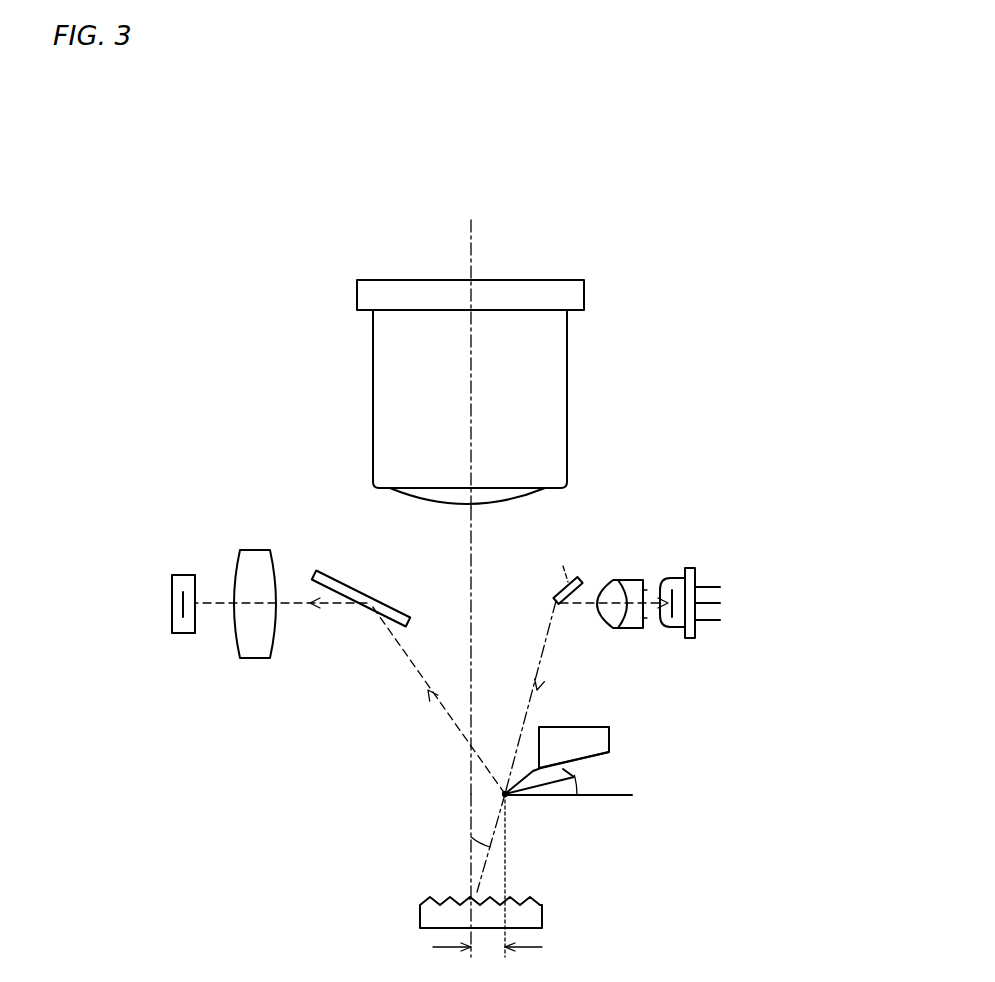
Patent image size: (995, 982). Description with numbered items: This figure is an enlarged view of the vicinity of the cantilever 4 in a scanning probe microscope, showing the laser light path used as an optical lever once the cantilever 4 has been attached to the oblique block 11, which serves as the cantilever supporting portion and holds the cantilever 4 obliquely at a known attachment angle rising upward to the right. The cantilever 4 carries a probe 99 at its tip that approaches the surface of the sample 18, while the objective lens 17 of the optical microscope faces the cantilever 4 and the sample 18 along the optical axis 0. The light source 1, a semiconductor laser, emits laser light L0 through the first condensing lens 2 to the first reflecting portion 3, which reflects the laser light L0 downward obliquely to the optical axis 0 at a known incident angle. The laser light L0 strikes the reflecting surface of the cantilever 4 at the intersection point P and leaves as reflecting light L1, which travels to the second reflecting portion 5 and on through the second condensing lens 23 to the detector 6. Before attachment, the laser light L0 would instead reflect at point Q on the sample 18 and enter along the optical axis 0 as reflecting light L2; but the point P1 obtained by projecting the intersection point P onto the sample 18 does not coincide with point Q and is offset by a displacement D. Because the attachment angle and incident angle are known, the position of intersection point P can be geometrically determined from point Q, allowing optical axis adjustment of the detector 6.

The optical axis 0 is at (486, 364).
The light source 1 is at (695, 578).
The first condensing lens 2 is at (627, 628).
The first reflecting portion 3 is at (577, 577).
The cantilever 4 is at (585, 762).
The second reflecting portion 5 is at (318, 567).
The detector 6 is at (172, 603).
The oblique block 11 is at (610, 727).
The objective lens 17 is at (567, 407).
The sample 18 is at (542, 917).
The second condensing lens 23 is at (255, 658).
The probe 99 is at (508, 797).
The laser light L0 is at (563, 665).
The reflecting light L1 is at (407, 657).
The reflecting light L2 is at (472, 570).
The intersection point P is at (505, 794).
The projected point P1 is at (507, 897).
The reflection point Q is at (470, 898).
The displacement D is at (487, 888).